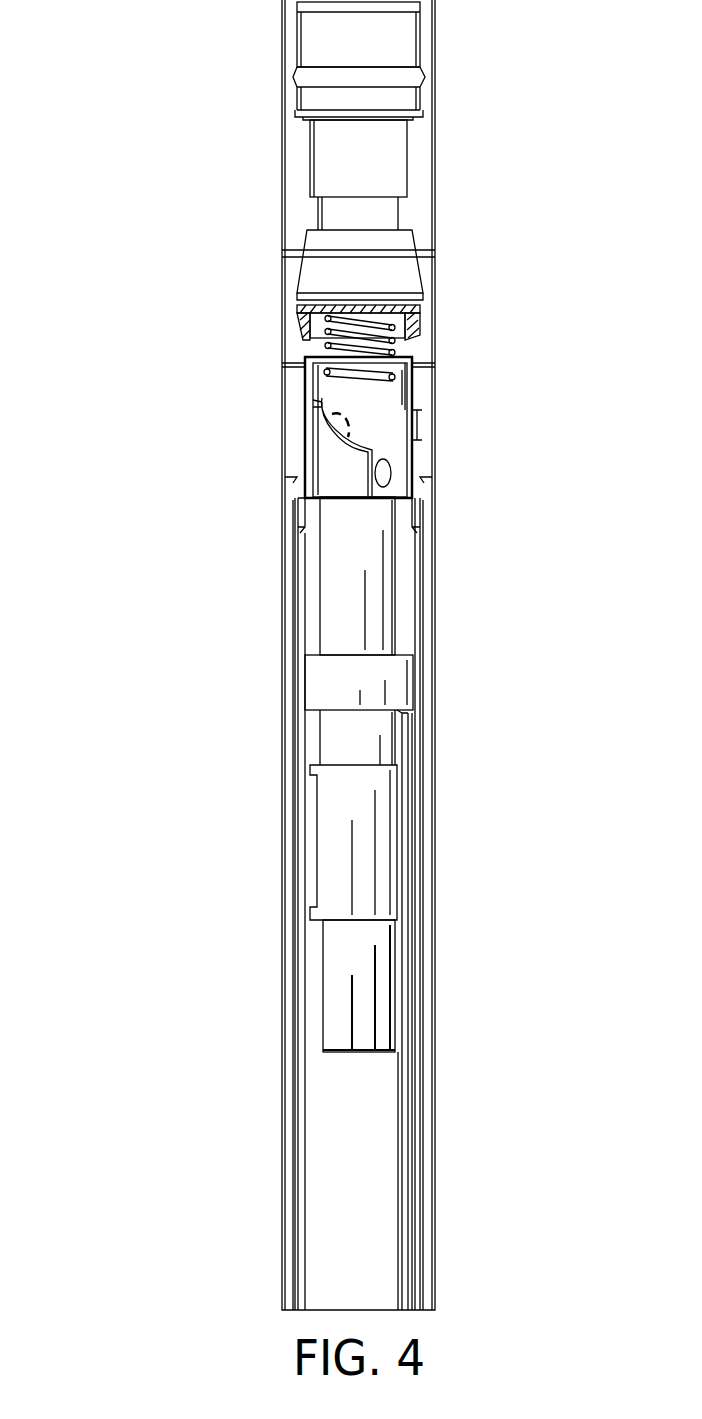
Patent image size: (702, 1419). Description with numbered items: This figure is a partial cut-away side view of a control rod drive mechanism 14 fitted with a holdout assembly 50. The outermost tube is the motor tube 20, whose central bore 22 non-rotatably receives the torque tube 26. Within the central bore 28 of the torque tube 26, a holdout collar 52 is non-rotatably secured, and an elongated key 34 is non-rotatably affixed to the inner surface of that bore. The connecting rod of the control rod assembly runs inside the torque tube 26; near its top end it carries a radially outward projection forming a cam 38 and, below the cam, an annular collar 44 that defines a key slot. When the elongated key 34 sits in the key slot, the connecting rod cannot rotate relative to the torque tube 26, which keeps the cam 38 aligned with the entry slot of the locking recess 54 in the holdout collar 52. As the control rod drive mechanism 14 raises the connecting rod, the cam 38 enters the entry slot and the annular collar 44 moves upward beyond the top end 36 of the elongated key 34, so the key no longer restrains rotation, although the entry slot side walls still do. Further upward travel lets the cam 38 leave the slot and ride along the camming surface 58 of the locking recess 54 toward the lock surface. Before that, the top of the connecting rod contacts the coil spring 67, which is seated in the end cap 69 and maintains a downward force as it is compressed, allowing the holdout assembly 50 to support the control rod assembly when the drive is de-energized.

The control rod drive mechanism 14 is at (143, 262).
The motor tube 20 is at (283, 933).
The central bore 22 is at (293, 745).
The torque tube 26 is at (307, 562).
The central bore 28 is at (305, 602).
The elongated key 34 is at (410, 1100).
The top end 36 is at (422, 733).
The cam 38 is at (395, 475).
The annular collar 44 is at (422, 685).
The holdout assembly 50 is at (455, 427).
The holdout collar 52 is at (413, 414).
The locking recess 54 is at (372, 428).
The camming surface 58 is at (330, 424).
The coil spring 67 is at (418, 338).
The end cap 69 is at (305, 320).